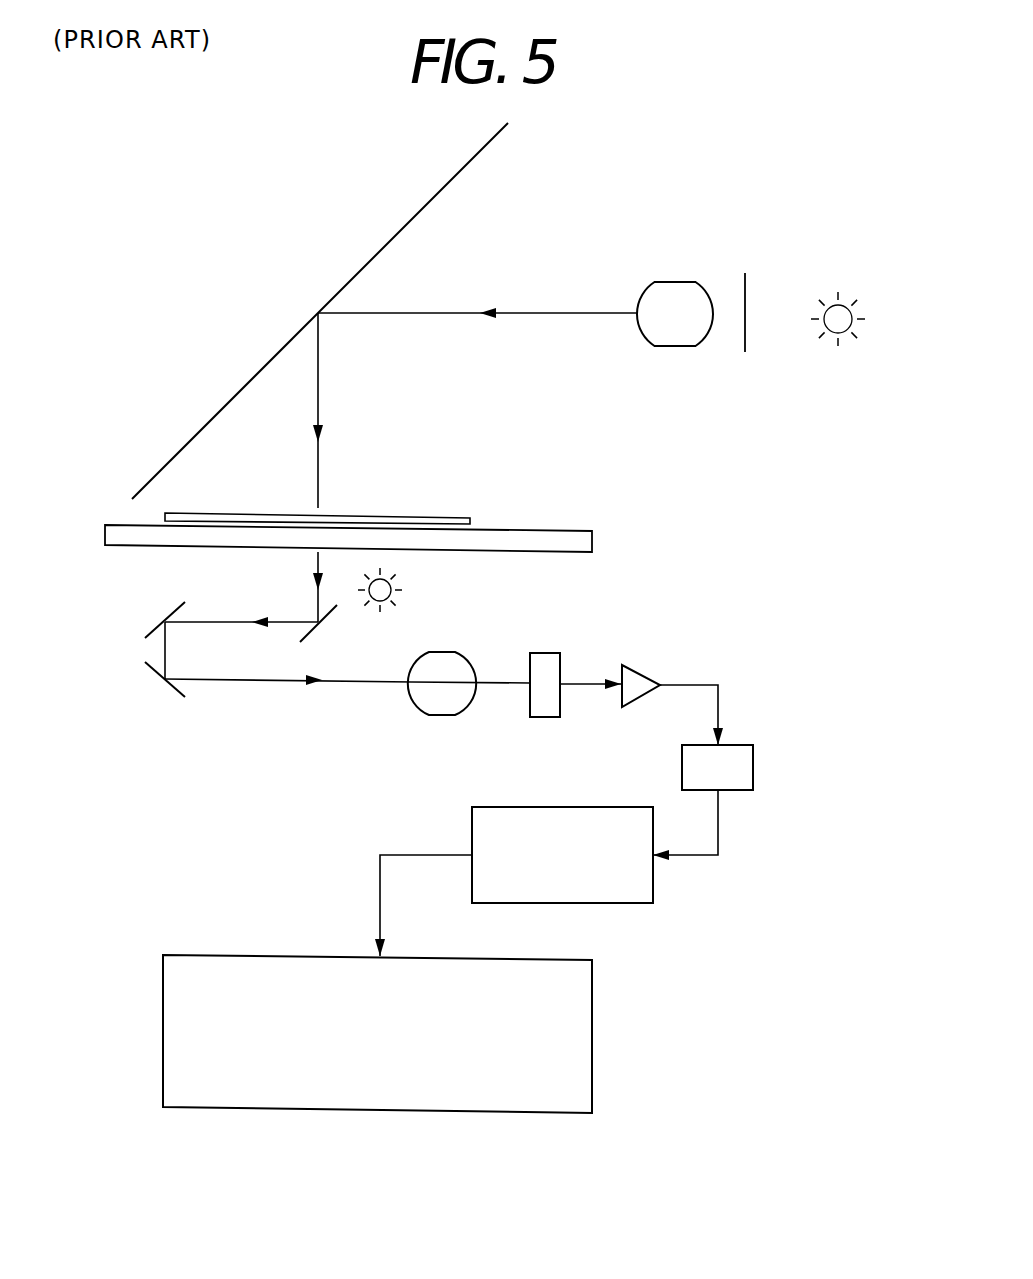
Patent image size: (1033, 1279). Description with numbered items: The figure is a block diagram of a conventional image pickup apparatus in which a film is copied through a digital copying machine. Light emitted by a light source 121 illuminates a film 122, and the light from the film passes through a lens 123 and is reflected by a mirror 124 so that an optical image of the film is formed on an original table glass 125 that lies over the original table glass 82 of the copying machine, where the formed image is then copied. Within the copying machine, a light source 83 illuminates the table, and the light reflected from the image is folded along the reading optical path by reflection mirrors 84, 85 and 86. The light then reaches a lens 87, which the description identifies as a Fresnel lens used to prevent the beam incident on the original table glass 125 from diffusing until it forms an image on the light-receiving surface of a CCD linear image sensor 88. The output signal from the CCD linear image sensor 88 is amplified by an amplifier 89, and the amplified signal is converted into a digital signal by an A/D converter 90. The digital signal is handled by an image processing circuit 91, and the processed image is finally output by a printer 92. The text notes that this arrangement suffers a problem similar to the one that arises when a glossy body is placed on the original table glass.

The light source 121 is at (848, 350).
The film 122 is at (745, 352).
The lens 123 is at (678, 282).
The mirror 124 is at (340, 290).
The original table glass 125 is at (390, 516).
The original table glass 82 is at (105, 532).
The light source 83 is at (404, 592).
The reflection mirror 84 is at (318, 629).
The reflection mirror 85 is at (160, 620).
The reflection mirror 86 is at (150, 672).
The lens 87 is at (445, 653).
The CCD linear image sensor 88 is at (552, 654).
The amplifier 89 is at (637, 674).
The A/D converter 90 is at (735, 745).
The image processing circuit 91 is at (605, 807).
The printer 92 is at (545, 958).